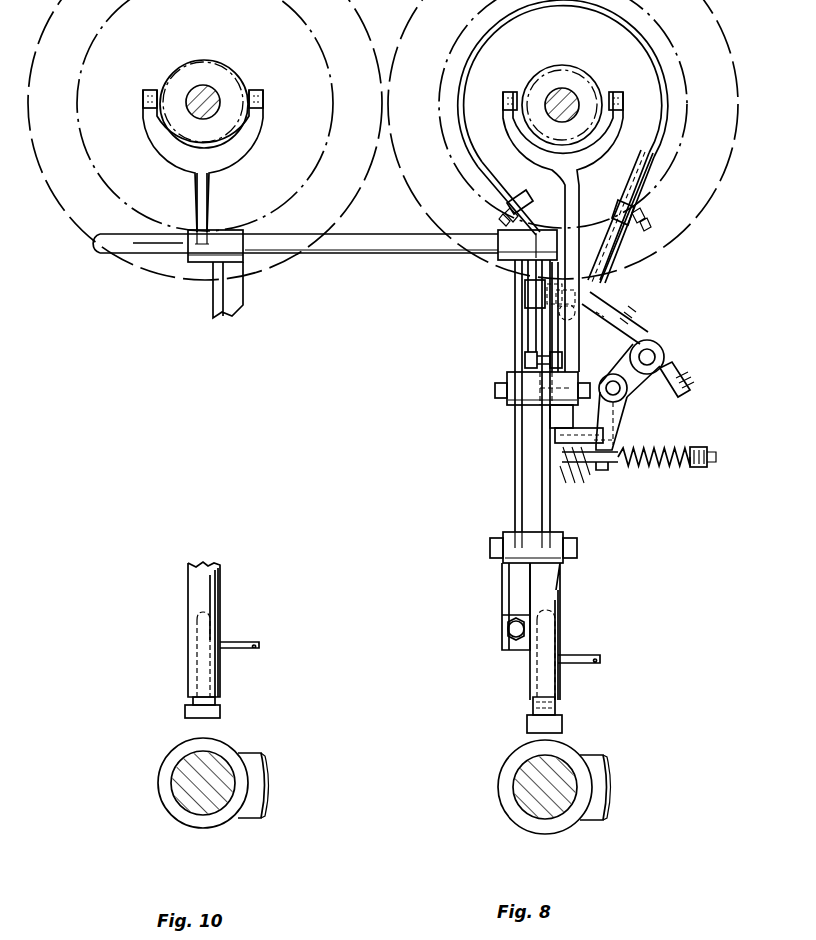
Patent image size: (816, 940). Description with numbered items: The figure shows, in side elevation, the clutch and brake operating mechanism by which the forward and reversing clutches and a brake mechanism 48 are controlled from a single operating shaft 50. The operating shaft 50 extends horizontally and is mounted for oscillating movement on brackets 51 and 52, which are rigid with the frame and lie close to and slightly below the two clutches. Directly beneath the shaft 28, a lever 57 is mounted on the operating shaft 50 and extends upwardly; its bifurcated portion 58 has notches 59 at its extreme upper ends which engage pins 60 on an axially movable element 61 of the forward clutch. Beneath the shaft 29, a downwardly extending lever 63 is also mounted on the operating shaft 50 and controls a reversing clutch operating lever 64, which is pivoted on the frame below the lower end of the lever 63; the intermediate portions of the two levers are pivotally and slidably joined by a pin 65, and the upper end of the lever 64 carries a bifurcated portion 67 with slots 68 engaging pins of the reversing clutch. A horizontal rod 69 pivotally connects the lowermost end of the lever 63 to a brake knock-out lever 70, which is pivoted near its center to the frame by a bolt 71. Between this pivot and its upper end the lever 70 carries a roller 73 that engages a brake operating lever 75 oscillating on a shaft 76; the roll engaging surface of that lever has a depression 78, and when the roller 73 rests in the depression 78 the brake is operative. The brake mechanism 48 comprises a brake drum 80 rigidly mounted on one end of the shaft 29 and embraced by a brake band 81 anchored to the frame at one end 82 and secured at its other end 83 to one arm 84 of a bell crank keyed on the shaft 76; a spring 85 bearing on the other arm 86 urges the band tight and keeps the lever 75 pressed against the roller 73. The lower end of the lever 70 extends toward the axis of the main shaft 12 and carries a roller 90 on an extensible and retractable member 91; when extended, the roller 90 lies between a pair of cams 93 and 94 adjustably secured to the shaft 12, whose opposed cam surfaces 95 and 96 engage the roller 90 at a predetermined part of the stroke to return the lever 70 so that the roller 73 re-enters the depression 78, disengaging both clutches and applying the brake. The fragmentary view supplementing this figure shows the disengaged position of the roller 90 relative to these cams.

In FIG. 8, the main shaft 12 is at (530, 783).
In FIG. 10, the main shaft 12 is at (207, 812).
In FIG. 8, the shaft 28 is at (204, 92).
In FIG. 8, the shaft 29 is at (565, 97).
In FIG. 8, the brake mechanism 48 is at (618, 246).
In FIG. 8, the operating shaft 50 is at (370, 256).
In FIG. 8, the bracket 51 is at (212, 298).
In FIG. 8, the bracket 52 is at (514, 280).
In FIG. 8, the lever 57 is at (195, 196).
In FIG. 8, the bifurcated portion 58 is at (248, 134).
In FIG. 8, the notches 59 is at (258, 90).
In FIG. 8, the pins 60 is at (264, 100).
In FIG. 8, the axially movable element 61 is at (180, 58).
In FIG. 8, the lever 63 is at (532, 330).
In FIG. 8, the reversing clutch operating lever 64 is at (572, 354).
In FIG. 8, the pin 65 is at (525, 296).
In FIG. 8, the bifurcated portion 67 is at (512, 141).
In FIG. 8, the slots 68 is at (505, 86).
In FIG. 8, the horizontal rod 69 is at (524, 361).
In FIG. 8, the brake knock-out lever 70 is at (558, 609).
In FIG. 10, the brake knock-out lever 70 is at (214, 601).
In FIG. 8, the bolt 71 is at (583, 550).
In FIG. 8, the roller 73 is at (550, 420).
In FIG. 8, the brake operating lever 75 is at (606, 444).
In FIG. 8, the shaft 76 is at (622, 402).
In FIG. 8, the depression 78 is at (556, 440).
In FIG. 8, the brake drum 80 is at (598, 196).
In FIG. 8, the brake band 81 is at (606, 187).
In FIG. 8, the anchored end 82 is at (606, 316).
In FIG. 8, the secured end 83 is at (680, 377).
In FIG. 8, the bell crank arm 84 is at (660, 353).
In FIG. 8, the spring 85 is at (660, 468).
In FIG. 8, the bell crank arm 86 is at (604, 472).
In FIG. 8, the roller 90 is at (526, 728).
In FIG. 10, the roller 90 is at (221, 712).
In FIG. 8, the member 91 is at (556, 706).
In FIG. 10, the member 91 is at (197, 672).
In FIG. 8, the cam 93 is at (549, 835).
In FIG. 10, the cam 94 is at (158, 782).
In FIG. 8, the cam surface 95 is at (606, 790).
In FIG. 10, the cam surface 96 is at (266, 790).